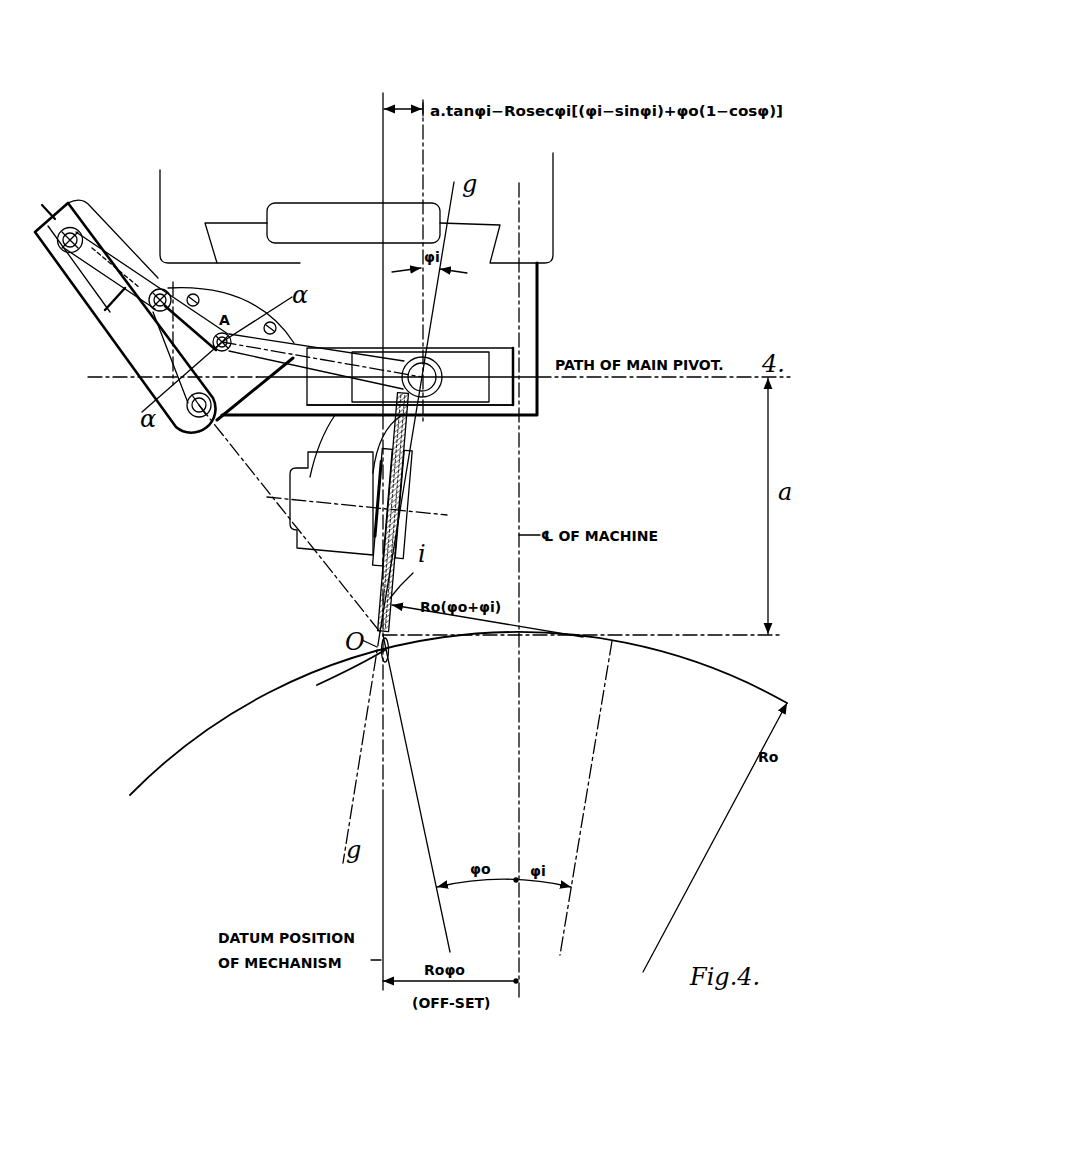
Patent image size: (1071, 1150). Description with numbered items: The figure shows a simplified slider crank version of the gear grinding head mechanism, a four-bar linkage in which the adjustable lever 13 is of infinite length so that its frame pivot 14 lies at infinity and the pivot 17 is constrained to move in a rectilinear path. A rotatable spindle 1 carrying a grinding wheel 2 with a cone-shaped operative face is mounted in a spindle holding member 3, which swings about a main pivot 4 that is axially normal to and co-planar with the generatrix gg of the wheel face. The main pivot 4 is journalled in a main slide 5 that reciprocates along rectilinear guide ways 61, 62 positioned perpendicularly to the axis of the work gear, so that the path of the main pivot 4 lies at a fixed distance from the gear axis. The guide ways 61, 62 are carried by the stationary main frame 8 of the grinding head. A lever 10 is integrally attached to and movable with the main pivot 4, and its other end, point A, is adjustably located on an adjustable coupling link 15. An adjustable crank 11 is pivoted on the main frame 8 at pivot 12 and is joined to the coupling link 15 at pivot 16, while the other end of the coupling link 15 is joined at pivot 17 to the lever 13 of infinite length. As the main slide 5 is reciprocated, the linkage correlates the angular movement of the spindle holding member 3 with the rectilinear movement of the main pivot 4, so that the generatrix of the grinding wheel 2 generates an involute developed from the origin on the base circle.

The rotatable spindle 1 is at (313, 533).
The grinding wheel 2 is at (402, 435).
The spindle holding member 3 is at (338, 432).
The main pivot 4 is at (424, 372).
The main slide 5 is at (468, 363).
The main frame 8 is at (527, 284).
The lever 10 is at (298, 352).
The adjustable crank 11 is at (160, 332).
The pivot 12 is at (195, 413).
The adjustable lever 13 is at (93, 282).
The pivot 14 is at (70, 240).
The adjustable coupling link 15 is at (107, 248).
The pivot 16 is at (163, 290).
The pivot 17 is at (70, 254).
The rectilinear guide way 61 is at (503, 347).
The rectilinear guide way 62 is at (497, 407).